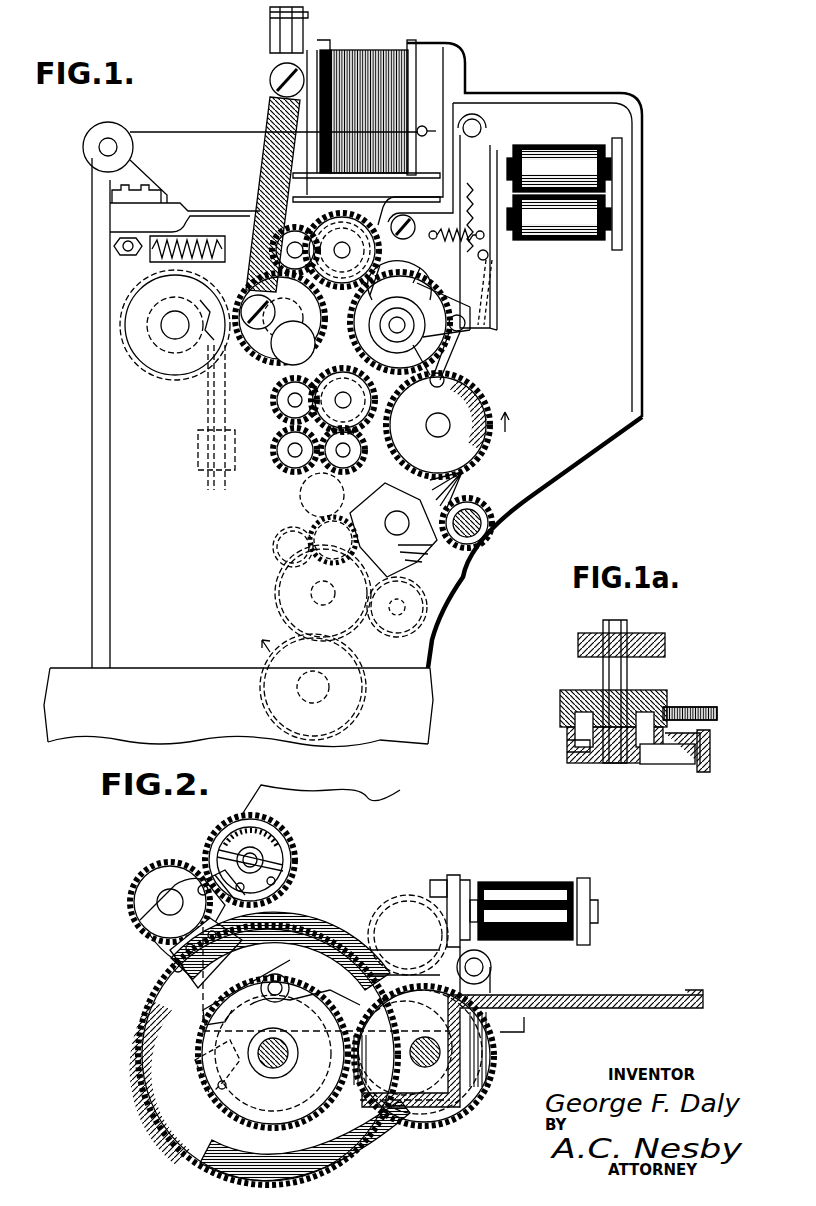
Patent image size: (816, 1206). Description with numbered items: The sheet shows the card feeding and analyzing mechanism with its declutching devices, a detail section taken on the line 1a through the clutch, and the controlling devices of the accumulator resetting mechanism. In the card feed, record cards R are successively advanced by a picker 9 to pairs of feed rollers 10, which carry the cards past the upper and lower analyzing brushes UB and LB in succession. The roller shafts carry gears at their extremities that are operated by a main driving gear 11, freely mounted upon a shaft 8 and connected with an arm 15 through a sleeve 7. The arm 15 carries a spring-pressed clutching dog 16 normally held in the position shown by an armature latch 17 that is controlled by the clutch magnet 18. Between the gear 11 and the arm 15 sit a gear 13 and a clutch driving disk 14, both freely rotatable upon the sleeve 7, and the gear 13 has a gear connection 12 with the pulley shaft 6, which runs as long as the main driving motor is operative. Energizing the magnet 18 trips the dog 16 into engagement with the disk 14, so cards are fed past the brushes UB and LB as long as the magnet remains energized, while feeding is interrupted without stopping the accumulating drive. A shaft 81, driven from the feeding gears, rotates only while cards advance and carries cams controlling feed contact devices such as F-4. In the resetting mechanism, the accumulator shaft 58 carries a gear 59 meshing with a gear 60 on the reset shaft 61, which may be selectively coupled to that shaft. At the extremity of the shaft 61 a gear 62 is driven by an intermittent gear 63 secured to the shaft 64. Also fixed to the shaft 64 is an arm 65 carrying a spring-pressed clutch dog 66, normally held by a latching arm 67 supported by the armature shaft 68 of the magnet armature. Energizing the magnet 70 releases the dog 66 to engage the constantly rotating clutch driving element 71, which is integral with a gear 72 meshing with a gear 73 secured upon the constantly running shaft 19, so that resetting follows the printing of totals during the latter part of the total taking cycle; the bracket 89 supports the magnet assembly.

In FIG. 1, the picker 9 is at (330, 52).
In FIG. 1, the record cards R is at (362, 62).
In FIG. 1, the feed rollers 10 is at (330, 225).
In FIG. 1, the main driving gear 11 is at (398, 290).
In FIG. 1a, the main driving gear 11 is at (560, 698).
In FIG. 1, the shaft 8 is at (410, 296).
In FIG. 1a, the shaft 8 is at (637, 698).
In FIG. 1, the sleeve 7 is at (425, 300).
In FIG. 1a, the sleeve 7 is at (626, 765).
In FIG. 1, the arm 15 is at (440, 305).
In FIG. 1a, the arm 15 is at (657, 758).
In FIG. 1, the armature latch 17 is at (490, 300).
In FIG. 1a, the armature latch 17 is at (707, 766).
In FIG. 1, the clutching dog 16 is at (448, 345).
In FIG. 1a, the clutching dog 16 is at (678, 735).
In FIG. 1, the clutch driving disk 14 is at (455, 365).
In FIG. 1a, the clutch driving disk 14 is at (568, 742).
In FIG. 1, the gear 13 is at (410, 370).
In FIG. 1a, the gear 13 is at (565, 722).
In FIG. 1, the gear connection 12 is at (458, 476).
In FIG. 1a, the gear connection 12 is at (704, 708).
In FIG. 1, the pulley shaft 6 is at (482, 522).
In FIG. 1, the clutch magnet 18 is at (566, 158).
In FIG. 1, the shaft 81 is at (168, 333).
In FIG. 1, the constantly running shaft 19 is at (300, 682).
In FIG. 2, the constantly running shaft 19 is at (440, 1053).
In FIG. 1, the upper analyzing brush UB is at (280, 319).
In FIG. 1, the lower analyzing brush LB is at (300, 525).
In FIG. 1, the contact device F-4 is at (205, 345).
In FIG. 1, the section line 1a is at (305, 296).
In FIG. 2, the shaft 58 is at (290, 850).
In FIG. 2, the gear 59 is at (292, 862).
In FIG. 2, the gear 60 is at (150, 870).
In FIG. 2, the reset shaft 61 is at (160, 897).
In FIG. 2, the gear 62 is at (148, 915).
In FIG. 2, the intermittent gear 63 is at (160, 1004).
In FIG. 2, the shaft 64 is at (268, 1055).
In FIG. 2, the arm 65 is at (225, 1105).
In FIG. 2, the clutch dog 66 is at (242, 1002).
In FIG. 2, the latching arm 67 is at (385, 945).
In FIG. 2, the armature shaft 68 is at (492, 968).
In FIG. 2, the bracket 89 is at (465, 877).
In FIG. 2, the magnet 70 is at (530, 886).
In FIG. 2, the clutch driving element 71 is at (282, 1098).
In FIG. 2, the gear 72 is at (303, 1113).
In FIG. 2, the gear 73 is at (490, 1078).